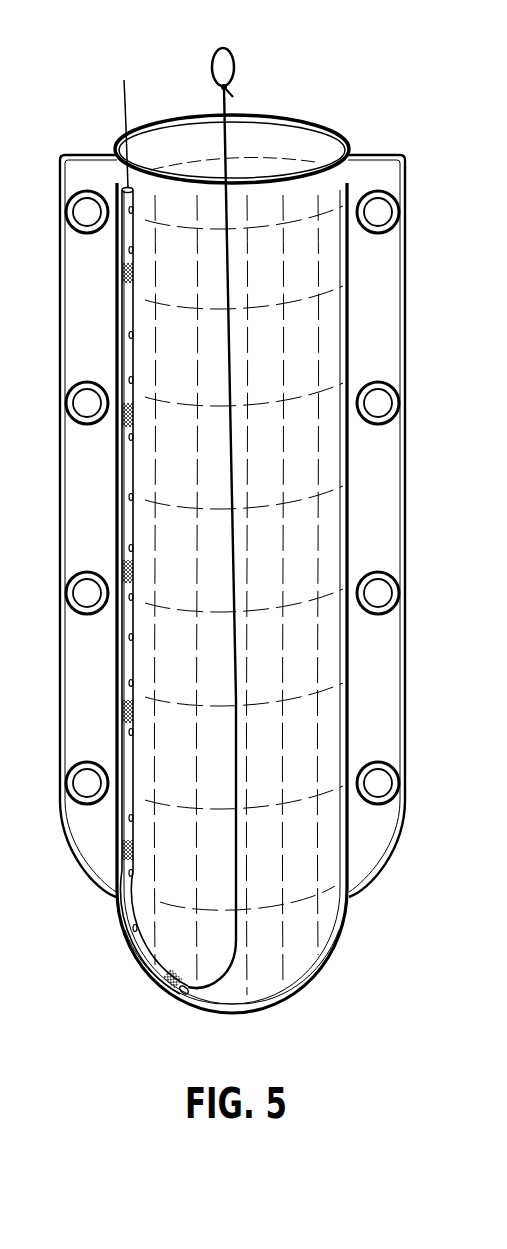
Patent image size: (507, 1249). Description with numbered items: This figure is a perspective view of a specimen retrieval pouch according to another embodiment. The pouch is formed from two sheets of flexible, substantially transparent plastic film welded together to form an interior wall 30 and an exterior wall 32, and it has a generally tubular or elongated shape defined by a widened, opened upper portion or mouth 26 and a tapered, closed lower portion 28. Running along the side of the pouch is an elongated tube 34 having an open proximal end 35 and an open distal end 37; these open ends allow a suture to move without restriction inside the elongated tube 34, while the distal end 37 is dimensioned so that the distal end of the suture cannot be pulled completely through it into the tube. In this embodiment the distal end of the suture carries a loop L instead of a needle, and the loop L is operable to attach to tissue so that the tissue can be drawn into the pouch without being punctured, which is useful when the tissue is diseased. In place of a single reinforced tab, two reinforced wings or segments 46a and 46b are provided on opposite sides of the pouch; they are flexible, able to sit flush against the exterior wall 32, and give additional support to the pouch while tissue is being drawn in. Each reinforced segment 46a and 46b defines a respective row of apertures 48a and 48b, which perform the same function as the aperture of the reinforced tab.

The mouth 26 is at (345, 157).
The lower portion 28 is at (333, 955).
The interior wall 30 is at (317, 143).
The exterior wall 32 is at (335, 273).
The elongated tube 34 is at (128, 312).
The proximal end 35 is at (128, 193).
The distal end 37 is at (155, 965).
The reinforced segment 46a is at (406, 312).
The reinforced segment 46b is at (70, 496).
The apertures 48a is at (393, 200).
The apertures 48b is at (77, 235).
The loop L is at (236, 61).